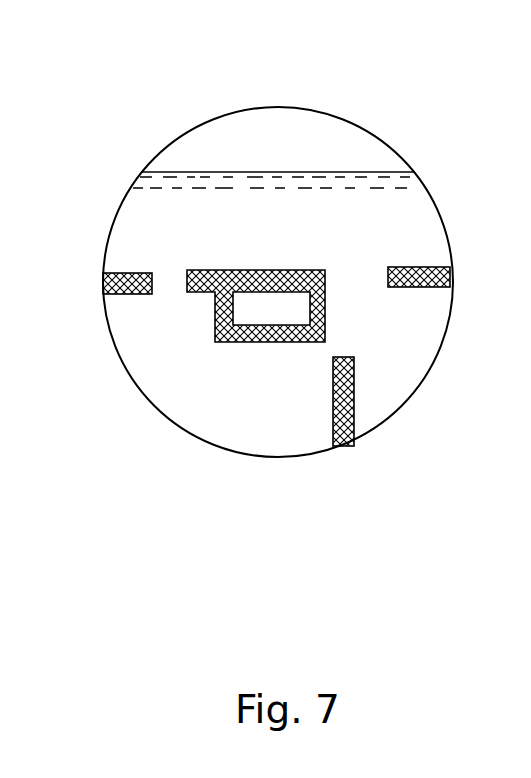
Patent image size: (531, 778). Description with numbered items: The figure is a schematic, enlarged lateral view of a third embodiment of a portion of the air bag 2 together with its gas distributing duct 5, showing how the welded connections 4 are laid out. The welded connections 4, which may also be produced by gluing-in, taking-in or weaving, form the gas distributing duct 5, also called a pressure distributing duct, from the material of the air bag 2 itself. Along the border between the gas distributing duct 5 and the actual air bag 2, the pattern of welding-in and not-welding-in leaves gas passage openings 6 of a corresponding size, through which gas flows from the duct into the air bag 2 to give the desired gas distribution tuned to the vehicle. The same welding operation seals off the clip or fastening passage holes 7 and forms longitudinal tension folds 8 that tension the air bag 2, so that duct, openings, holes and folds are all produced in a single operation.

The air bag 2 is at (270, 473).
The welded connections 4 is at (115, 298).
The gas distributing duct 5 is at (363, 228).
The gas passage openings 6 is at (173, 267).
The fastening passage holes 7 is at (270, 306).
The tension folds 8 is at (355, 411).